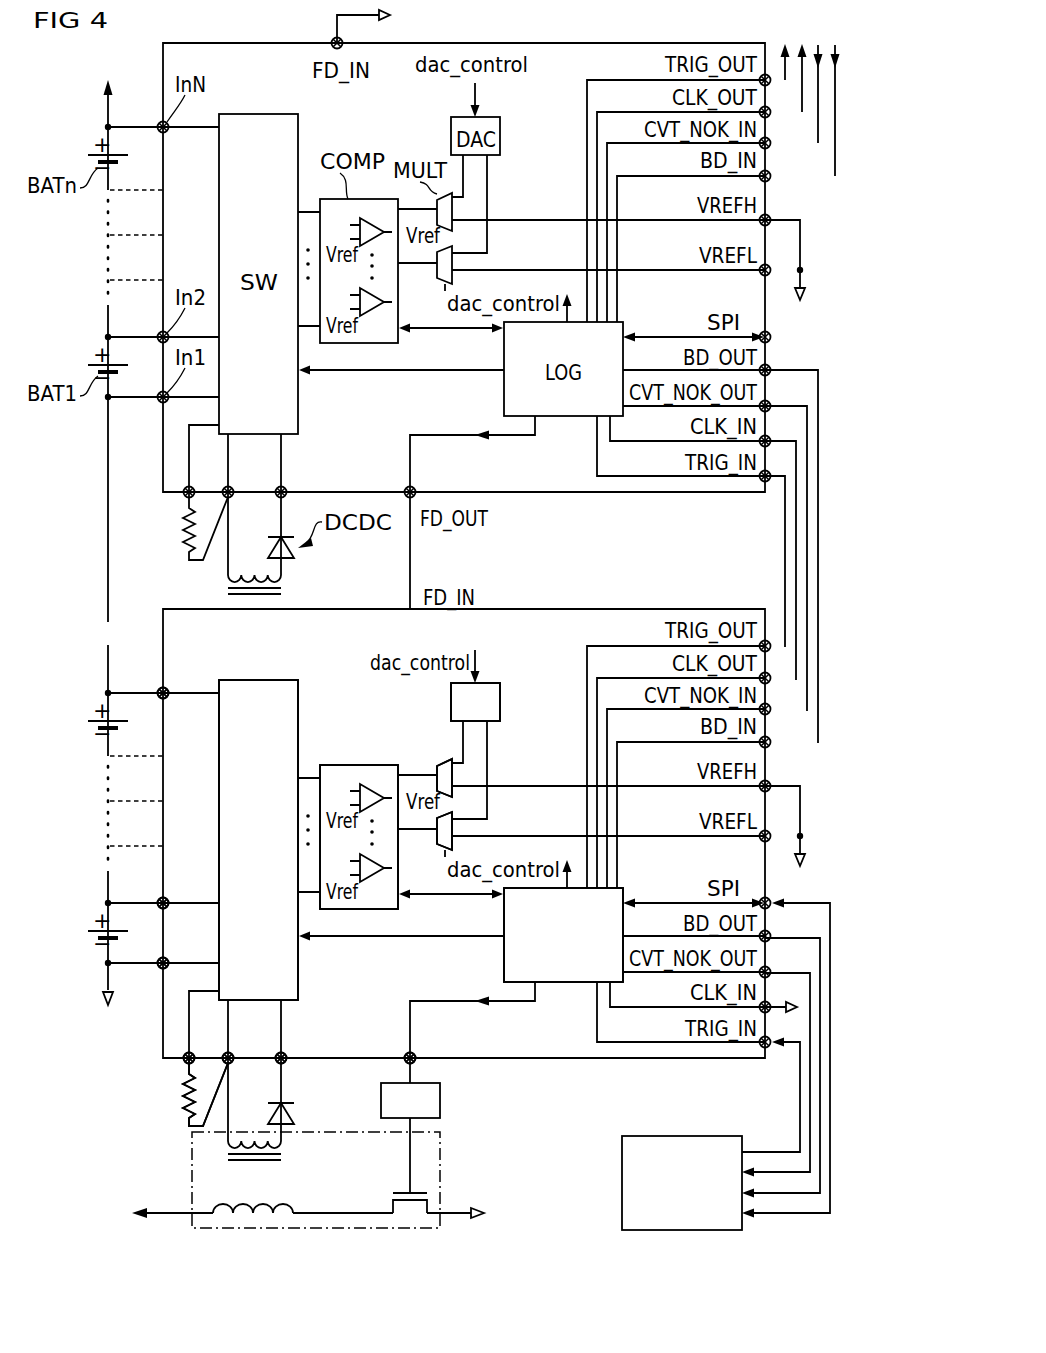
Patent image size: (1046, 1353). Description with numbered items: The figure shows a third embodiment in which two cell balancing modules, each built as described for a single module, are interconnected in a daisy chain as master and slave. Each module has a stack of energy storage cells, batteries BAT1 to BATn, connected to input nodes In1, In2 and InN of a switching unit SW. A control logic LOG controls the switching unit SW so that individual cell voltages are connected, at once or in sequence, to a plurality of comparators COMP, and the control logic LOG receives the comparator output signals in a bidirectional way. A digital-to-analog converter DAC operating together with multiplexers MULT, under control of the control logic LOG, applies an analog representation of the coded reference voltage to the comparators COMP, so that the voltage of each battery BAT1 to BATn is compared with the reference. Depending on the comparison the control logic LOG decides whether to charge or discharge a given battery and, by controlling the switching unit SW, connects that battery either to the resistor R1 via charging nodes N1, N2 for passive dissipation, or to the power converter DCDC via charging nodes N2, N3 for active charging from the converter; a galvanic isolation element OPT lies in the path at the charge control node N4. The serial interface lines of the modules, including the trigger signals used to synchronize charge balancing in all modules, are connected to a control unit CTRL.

The charging/discharging node N1 is at (186, 1064).
The charging/discharging node N2 is at (233, 1055).
The charging/discharging node N3 is at (286, 1055).
The charge control node N4 is at (405, 1055).
The resistor R1 is at (184, 1110).
The input node InN is at (167, 688).
The input node In2 is at (167, 899).
The input node In1 is at (167, 959).
The energy storage cell BATn is at (98, 734).
The energy storage cell BAT1 is at (98, 942).
The switching unit SW is at (258, 840).
The comparator COMP is at (348, 765).
The multiplexer MULT is at (437, 760).
The digital-to-analog converter DAC is at (475, 702).
The control logic LOG is at (563, 935).
The galvanic isolation element OPT is at (410, 1138).
The power converter DCDC is at (440, 1150).
The control unit CTRL is at (726, 1065).